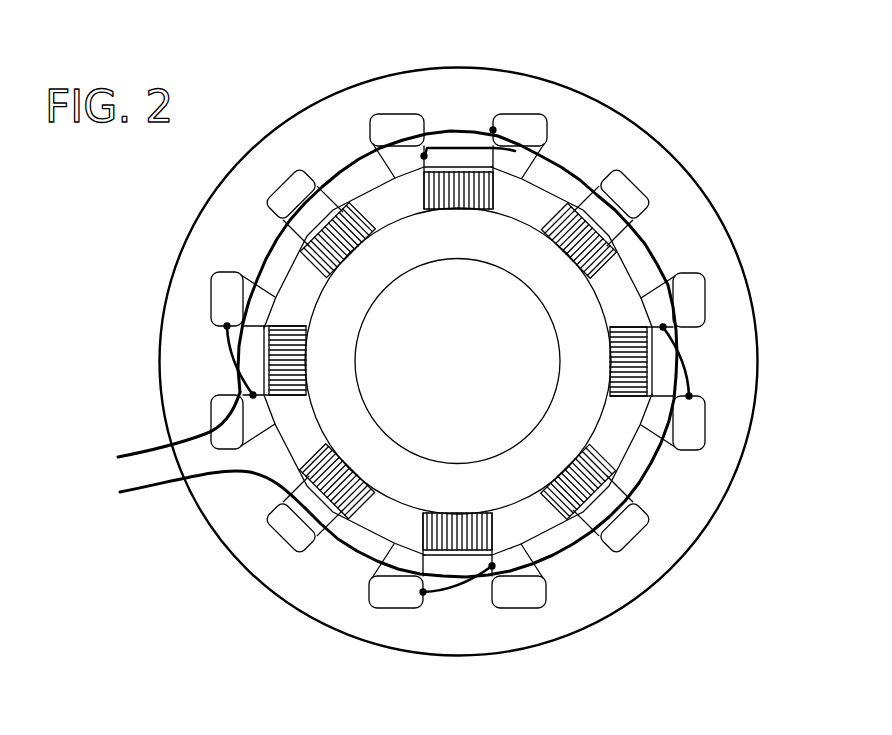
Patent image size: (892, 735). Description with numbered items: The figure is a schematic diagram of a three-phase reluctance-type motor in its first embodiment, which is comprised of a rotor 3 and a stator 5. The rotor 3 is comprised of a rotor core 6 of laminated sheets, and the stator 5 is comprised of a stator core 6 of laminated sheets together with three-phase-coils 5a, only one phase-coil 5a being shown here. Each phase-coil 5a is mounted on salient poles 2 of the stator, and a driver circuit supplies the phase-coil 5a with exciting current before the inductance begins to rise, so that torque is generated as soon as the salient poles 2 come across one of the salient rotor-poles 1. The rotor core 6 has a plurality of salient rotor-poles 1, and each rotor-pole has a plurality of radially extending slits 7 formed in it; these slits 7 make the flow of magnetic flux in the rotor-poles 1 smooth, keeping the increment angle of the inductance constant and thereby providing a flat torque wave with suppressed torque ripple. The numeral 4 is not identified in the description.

The salient rotor-pole 1 is at (384, 206).
The salient pole 2 is at (500, 128).
The rotor 3 is at (521, 234).
The rotor 4 is at (532, 292).
The stator 5 is at (661, 158).
The phase-coil 5a is at (147, 494).
The stator core 6 is at (700, 184).
The radially extending slit 7 is at (458, 214).